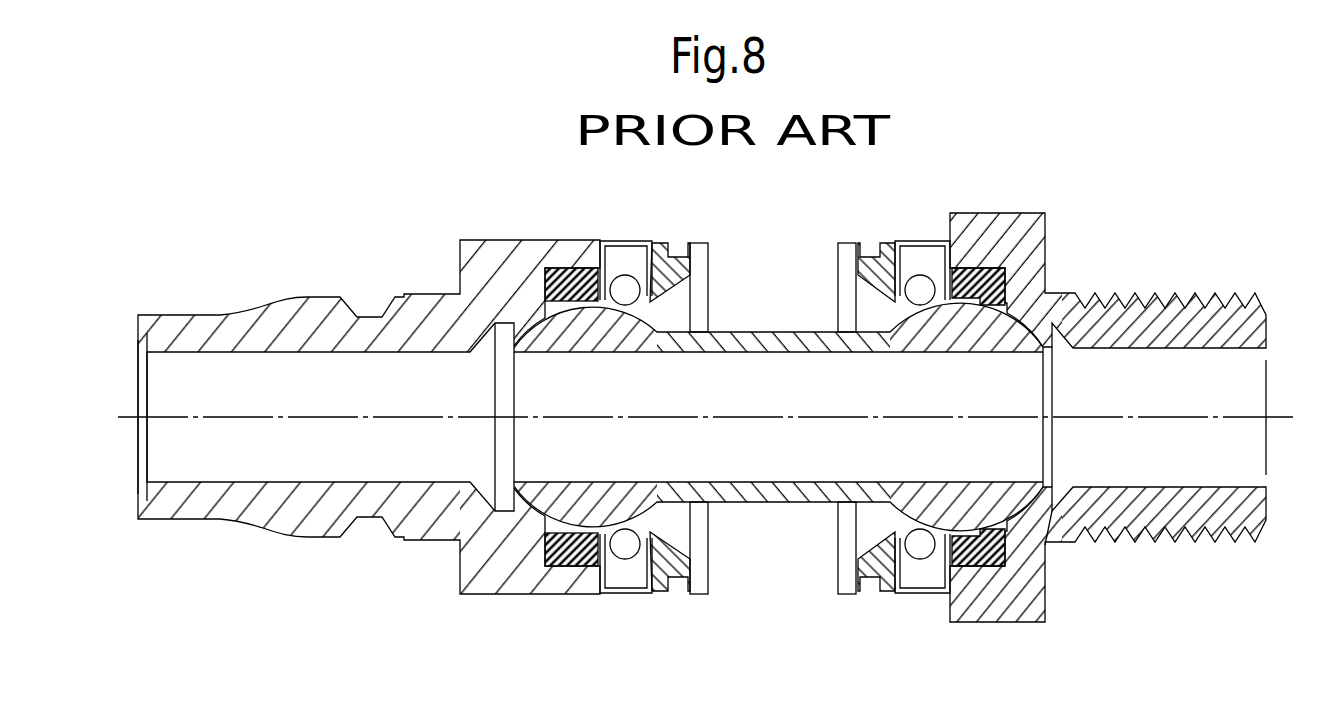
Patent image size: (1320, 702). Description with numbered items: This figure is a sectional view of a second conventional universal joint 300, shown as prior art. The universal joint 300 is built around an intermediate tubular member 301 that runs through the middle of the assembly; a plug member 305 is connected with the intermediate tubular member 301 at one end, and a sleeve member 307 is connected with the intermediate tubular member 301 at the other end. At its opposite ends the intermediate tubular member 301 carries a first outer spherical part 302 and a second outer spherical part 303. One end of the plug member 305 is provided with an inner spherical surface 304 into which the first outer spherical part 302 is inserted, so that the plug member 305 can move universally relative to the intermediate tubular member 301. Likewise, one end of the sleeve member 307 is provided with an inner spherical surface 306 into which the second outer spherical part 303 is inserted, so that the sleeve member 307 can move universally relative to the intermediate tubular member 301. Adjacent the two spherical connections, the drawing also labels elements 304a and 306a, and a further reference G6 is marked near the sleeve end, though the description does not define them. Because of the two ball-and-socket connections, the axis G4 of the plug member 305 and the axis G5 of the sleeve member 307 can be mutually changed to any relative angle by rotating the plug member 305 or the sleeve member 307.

The universal joint 300 is at (1153, 80).
The intermediate tubular member 301 is at (760, 503).
The first outer spherical part 302 is at (568, 567).
The second outer spherical part 303 is at (950, 600).
The inner spherical surface 304 is at (668, 297).
The ball bearing 304a is at (722, 300).
The plug member 305 is at (478, 238).
The inner spherical surface 306 is at (873, 300).
The ball bearing 306a is at (838, 300).
The sleeve member 307 is at (1017, 213).
The axis of the plug member G4 is at (121, 417).
The axis of the sleeve member G5 is at (1289, 417).
The gap G6 is at (1057, 560).